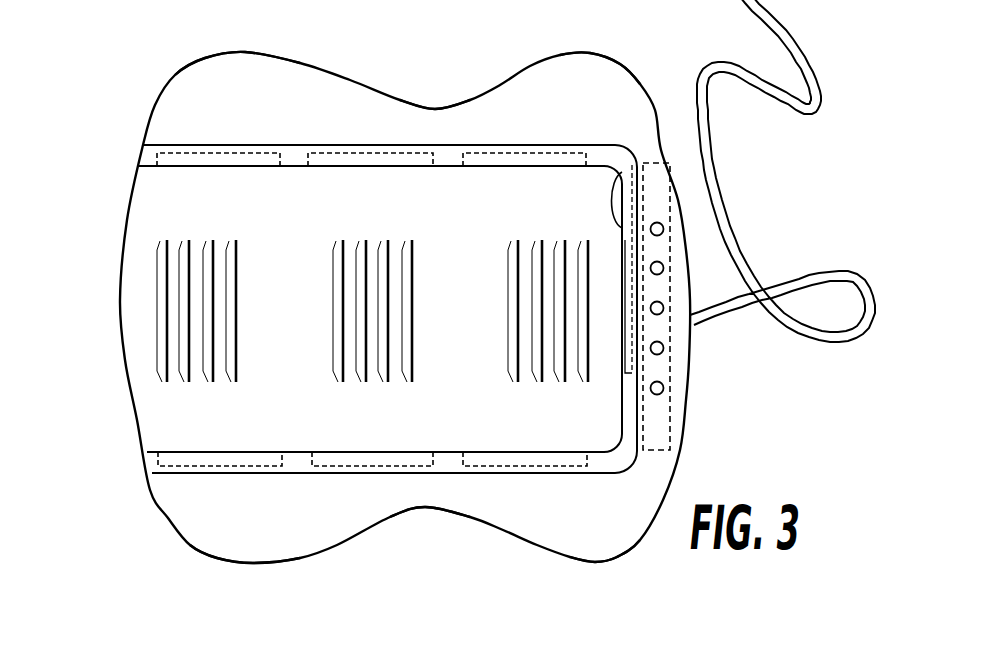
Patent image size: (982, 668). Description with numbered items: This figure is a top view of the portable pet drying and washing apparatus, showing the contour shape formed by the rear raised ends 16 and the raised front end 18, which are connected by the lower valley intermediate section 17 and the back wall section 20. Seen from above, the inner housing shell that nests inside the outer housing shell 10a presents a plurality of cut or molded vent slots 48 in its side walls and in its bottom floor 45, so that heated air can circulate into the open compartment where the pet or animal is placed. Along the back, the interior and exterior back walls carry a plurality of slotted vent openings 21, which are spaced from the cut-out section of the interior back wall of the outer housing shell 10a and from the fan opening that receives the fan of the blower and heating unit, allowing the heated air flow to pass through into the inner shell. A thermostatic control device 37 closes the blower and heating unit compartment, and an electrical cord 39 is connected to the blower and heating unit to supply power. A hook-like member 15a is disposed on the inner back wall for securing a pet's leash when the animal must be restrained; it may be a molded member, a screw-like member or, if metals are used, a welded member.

The outer housing shell 10a is at (112, 188).
The hook-like member 15a is at (608, 160).
The rear raised ends 16 is at (623, 60).
The lower valley intermediate section 17 is at (460, 100).
The raised front end 18 is at (213, 58).
The back wall section 20 is at (688, 388).
The slotted vent openings 21 is at (627, 285).
The thermostatic control device 37 is at (670, 342).
The electrical cord 39 is at (790, 43).
The bottom floor 45 is at (477, 356).
The vent slots 48 is at (216, 153).